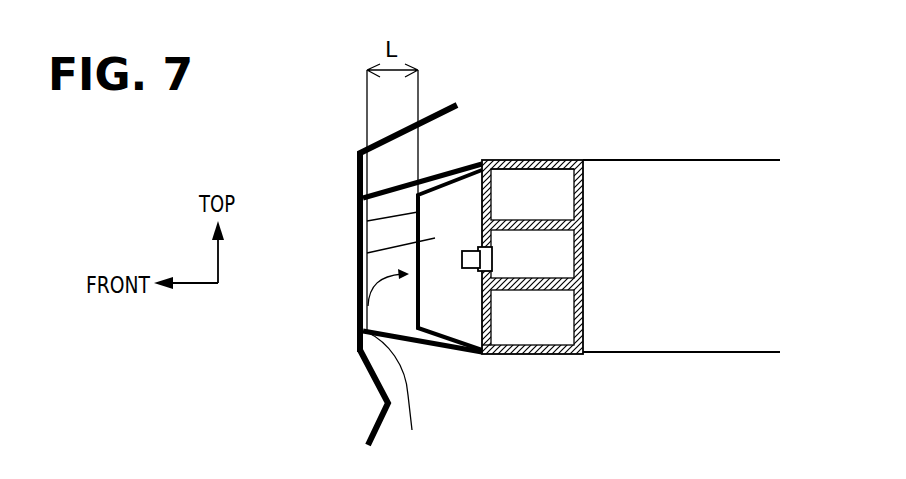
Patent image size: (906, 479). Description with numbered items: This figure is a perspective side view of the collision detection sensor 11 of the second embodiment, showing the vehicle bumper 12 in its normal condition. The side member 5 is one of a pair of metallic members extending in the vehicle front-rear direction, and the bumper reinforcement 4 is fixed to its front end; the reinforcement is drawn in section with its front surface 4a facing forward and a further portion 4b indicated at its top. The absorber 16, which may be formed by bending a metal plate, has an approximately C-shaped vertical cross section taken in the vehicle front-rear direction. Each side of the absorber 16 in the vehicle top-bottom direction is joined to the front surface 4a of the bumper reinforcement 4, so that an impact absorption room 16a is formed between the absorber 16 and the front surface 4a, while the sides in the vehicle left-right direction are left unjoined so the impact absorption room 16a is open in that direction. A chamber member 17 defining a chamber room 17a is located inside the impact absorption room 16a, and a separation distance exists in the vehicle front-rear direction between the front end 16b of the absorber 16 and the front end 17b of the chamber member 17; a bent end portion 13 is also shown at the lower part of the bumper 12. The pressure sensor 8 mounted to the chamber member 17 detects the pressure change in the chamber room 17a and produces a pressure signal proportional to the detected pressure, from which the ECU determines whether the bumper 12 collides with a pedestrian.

The bumper reinforcement 4 is at (550, 150).
The front surface of the bumper reinforcement 4a is at (479, 355).
The upper wall of housing 4b is at (512, 158).
The side member 5 is at (754, 158).
The pressure sensor 8 is at (465, 250).
The collision detection sensor 11 is at (303, 144).
The vehicle bumper 12 is at (326, 212).
The bent end portion 13 is at (372, 386).
The absorber 16 is at (405, 346).
The impact absorption room 16a is at (358, 331).
The front end of the absorber 16b is at (393, 400).
The chamber member 17 is at (392, 312).
The chamber room 17a is at (359, 256).
The front end of the chamber member 17b is at (358, 223).